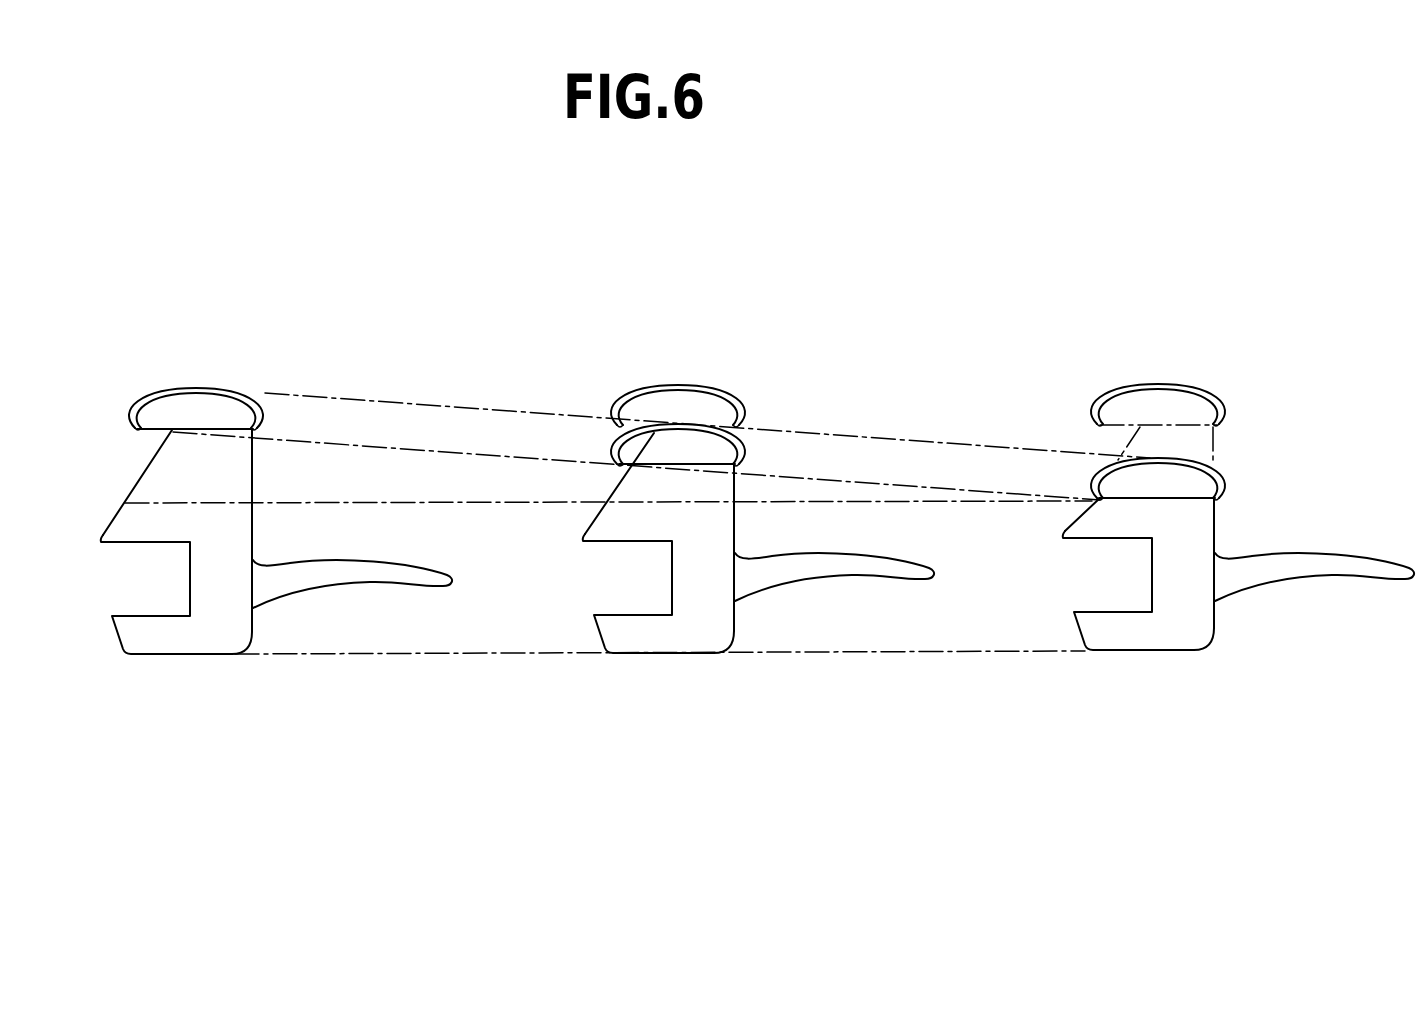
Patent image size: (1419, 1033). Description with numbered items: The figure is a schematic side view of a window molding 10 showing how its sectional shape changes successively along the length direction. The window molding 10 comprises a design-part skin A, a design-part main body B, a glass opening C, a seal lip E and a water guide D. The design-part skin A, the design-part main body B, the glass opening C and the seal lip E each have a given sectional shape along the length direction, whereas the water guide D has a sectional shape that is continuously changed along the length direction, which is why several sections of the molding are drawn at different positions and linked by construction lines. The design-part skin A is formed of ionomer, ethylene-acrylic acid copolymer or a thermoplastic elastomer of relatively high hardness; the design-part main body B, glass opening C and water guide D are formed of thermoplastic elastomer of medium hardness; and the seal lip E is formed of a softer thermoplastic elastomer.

The window molding 10 is at (219, 706).
The design-part skin A is at (160, 391).
The design-part main body B is at (208, 398).
The glass opening C is at (205, 633).
The water guide D is at (172, 470).
The seal lip E is at (312, 577).